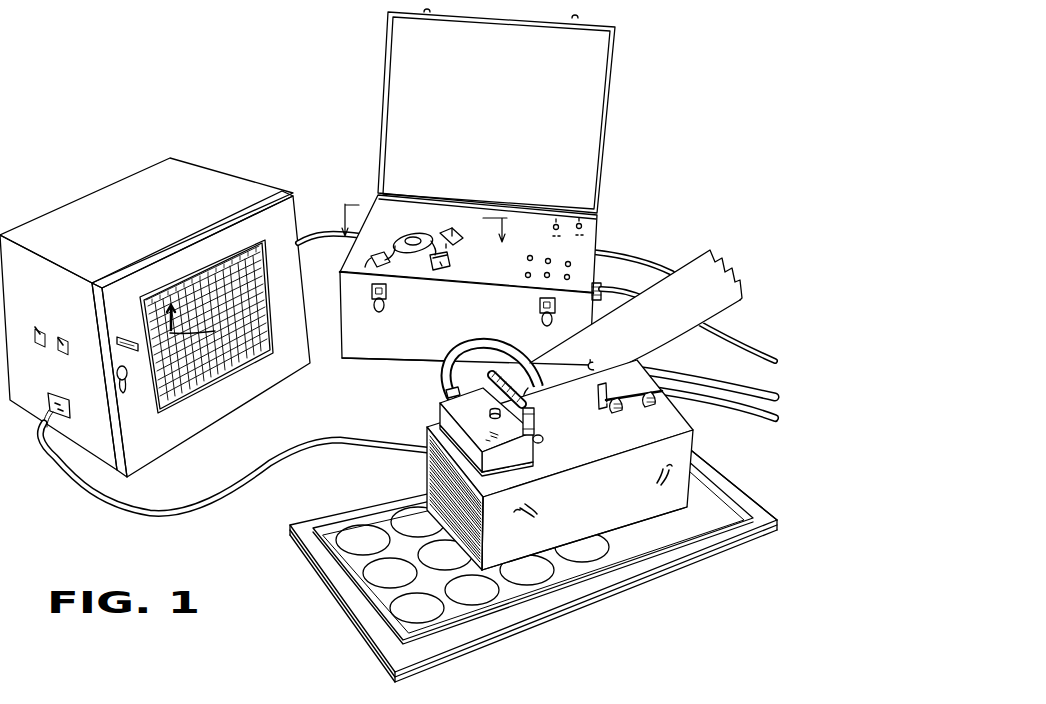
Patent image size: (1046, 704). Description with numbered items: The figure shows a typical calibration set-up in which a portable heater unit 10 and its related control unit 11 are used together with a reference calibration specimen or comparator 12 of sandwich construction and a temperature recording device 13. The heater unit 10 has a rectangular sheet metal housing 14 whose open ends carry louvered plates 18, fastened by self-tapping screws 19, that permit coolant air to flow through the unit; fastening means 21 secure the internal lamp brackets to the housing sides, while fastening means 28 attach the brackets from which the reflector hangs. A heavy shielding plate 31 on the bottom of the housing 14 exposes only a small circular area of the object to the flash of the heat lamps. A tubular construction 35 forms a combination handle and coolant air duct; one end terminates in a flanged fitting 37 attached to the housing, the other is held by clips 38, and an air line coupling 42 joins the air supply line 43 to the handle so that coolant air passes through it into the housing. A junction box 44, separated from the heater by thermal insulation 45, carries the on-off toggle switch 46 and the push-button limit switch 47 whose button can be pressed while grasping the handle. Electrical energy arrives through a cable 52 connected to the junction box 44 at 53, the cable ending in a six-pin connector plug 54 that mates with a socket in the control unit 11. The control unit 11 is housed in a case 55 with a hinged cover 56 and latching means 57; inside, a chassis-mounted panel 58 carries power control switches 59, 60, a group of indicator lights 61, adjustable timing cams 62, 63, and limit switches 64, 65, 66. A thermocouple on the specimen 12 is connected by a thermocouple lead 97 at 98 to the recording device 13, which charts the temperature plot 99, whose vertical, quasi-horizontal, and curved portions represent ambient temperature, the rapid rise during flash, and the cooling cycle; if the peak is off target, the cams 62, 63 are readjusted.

The portable heater unit 10 is at (600, 505).
The control unit 11 is at (450, 340).
The calibration specimen 12 is at (333, 598).
The temperature recording device 13 is at (138, 228).
The housing 14 is at (692, 493).
The louvered plate 18 is at (447, 512).
The self-tapping screws 19 is at (482, 548).
The fastening means 21 is at (593, 499).
The fastening means 28 is at (520, 475).
The shielding plate 31 is at (619, 530).
The tubular construction 35 is at (598, 412).
The flanged fitting 37 is at (543, 441).
The clips 38 is at (628, 413).
The air line coupling 42 is at (536, 420).
The air supply line 43 is at (730, 413).
The junction box 44 is at (439, 411).
The thermal insulation 45 is at (505, 478).
The toggle switch 46 is at (498, 451).
The limit switch 47 is at (491, 412).
The cable 52 is at (722, 377).
The cable connection 53 is at (447, 390).
The electrical connector plug 54 is at (603, 289).
The case 55 is at (383, 362).
The hinged cover 56 is at (504, 128).
The latching means 57 is at (377, 313).
The chassis-mounted panel 58 is at (504, 283).
The power control switch 59 is at (555, 223).
The power control switch 60 is at (582, 227).
The indicator lights 61 is at (580, 254).
The adjustable timing cam 62 is at (452, 256).
The adjustable timing cam 63 is at (405, 234).
The limit switch 64 is at (447, 232).
The limit switch 65 is at (348, 256).
The limit switch 66 is at (437, 266).
The thermocouple lead 97 is at (228, 492).
The connection point 98 is at (50, 398).
The recorded temperature plot 99 is at (149, 395).